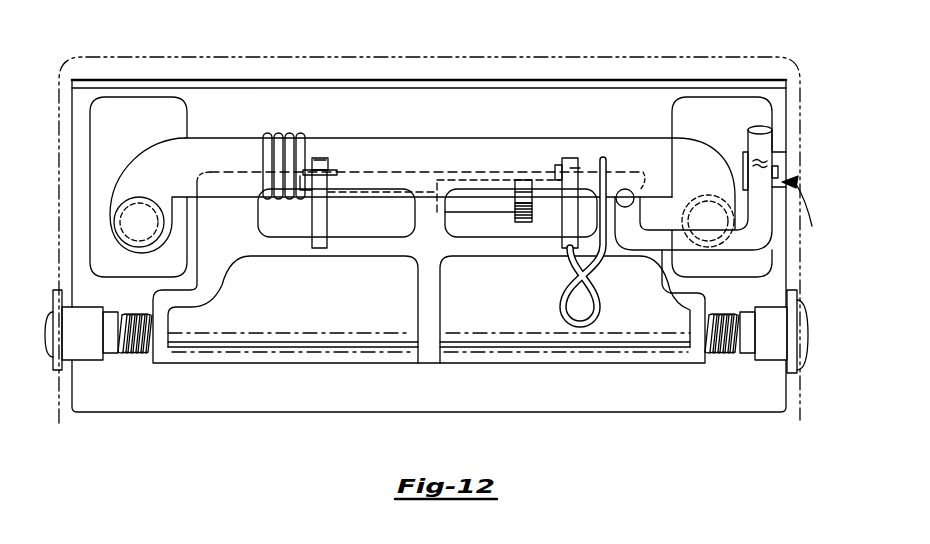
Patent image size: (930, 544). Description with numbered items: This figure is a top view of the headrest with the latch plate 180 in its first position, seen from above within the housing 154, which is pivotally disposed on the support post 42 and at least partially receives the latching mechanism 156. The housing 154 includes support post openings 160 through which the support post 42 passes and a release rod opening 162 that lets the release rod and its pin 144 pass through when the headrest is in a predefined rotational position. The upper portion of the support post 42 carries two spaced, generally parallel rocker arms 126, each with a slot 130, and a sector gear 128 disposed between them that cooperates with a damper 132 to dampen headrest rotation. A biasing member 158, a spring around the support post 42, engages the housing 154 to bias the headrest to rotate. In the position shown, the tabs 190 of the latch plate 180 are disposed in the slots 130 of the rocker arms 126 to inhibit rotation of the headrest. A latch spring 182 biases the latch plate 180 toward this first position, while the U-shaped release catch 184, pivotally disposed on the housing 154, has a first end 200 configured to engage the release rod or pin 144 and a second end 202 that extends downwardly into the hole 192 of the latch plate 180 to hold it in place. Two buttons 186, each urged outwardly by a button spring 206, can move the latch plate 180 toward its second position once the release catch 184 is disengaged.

The support post 42 is at (443, 168).
The rocker arm 126 is at (318, 240).
The sector gear 128 is at (522, 222).
The slot 130 is at (340, 170).
The damper 132 is at (473, 207).
The pin 144 is at (782, 172).
The housing 154 is at (399, 80).
The latching mechanism 156 is at (769, 46).
The biasing member 158 is at (268, 134).
The support post opening 160 is at (90, 215).
The release rod opening 162 is at (806, 212).
The latch plate 180 is at (395, 364).
The latch spring 182 is at (562, 297).
The release catch 184 is at (697, 250).
The button 186 is at (50, 342).
The tab 190 is at (315, 158).
The hole 192 is at (636, 176).
The first end 200 is at (757, 129).
The second end 202 is at (648, 178).
The button spring 206 is at (128, 353).